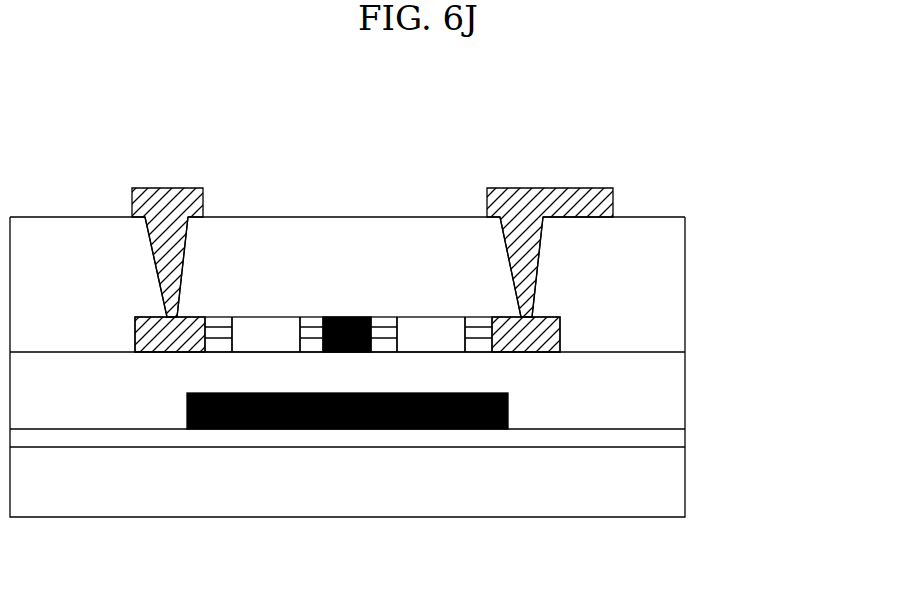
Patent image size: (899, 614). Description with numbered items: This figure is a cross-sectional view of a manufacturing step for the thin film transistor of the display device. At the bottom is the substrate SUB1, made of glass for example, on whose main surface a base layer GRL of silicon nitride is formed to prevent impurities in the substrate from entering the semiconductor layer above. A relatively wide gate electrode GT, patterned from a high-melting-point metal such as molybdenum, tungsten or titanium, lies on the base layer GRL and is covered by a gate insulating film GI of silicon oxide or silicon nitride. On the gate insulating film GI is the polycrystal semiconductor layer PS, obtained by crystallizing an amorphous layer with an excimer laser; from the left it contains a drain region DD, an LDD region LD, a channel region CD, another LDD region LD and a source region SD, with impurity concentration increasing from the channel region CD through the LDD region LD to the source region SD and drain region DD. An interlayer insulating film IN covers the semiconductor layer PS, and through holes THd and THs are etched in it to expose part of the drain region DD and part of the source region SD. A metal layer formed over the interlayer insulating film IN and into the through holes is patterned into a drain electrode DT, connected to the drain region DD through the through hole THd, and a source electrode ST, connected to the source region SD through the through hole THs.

The interlayer insulating film IN is at (650, 290).
The polycrystal semiconductor layer PS is at (563, 335).
The gate insulating film GI is at (650, 402).
The base layer GRL is at (658, 440).
The substrate SUB1 is at (643, 490).
The gate electrode GT is at (253, 430).
The drain region DD is at (168, 333).
The LDD region LD is at (218, 337).
The channel region CD is at (427, 337).
The source region SD is at (527, 333).
The drain electrode DT is at (162, 198).
The through hole THd is at (167, 252).
The source electrode ST is at (525, 207).
The through hole THs is at (525, 260).